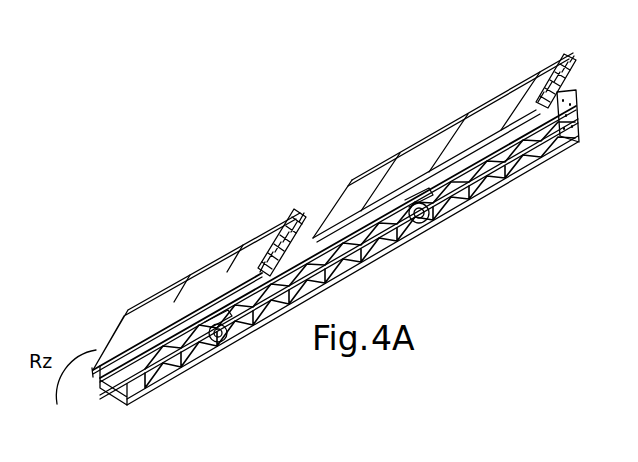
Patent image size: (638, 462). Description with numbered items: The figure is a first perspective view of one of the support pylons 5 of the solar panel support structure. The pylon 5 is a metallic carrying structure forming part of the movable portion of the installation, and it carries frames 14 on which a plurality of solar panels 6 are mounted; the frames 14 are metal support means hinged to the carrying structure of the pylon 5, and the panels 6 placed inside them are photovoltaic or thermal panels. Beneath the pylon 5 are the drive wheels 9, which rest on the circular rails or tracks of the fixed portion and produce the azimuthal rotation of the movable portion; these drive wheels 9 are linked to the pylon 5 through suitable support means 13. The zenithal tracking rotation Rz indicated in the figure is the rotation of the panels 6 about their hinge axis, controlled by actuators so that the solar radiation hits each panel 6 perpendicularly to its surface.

The pylon 5 is at (565, 152).
The solar panel 6 is at (262, 225).
The drive wheel 9 is at (212, 344).
The support means 13 is at (184, 356).
The frame 14 is at (303, 209).